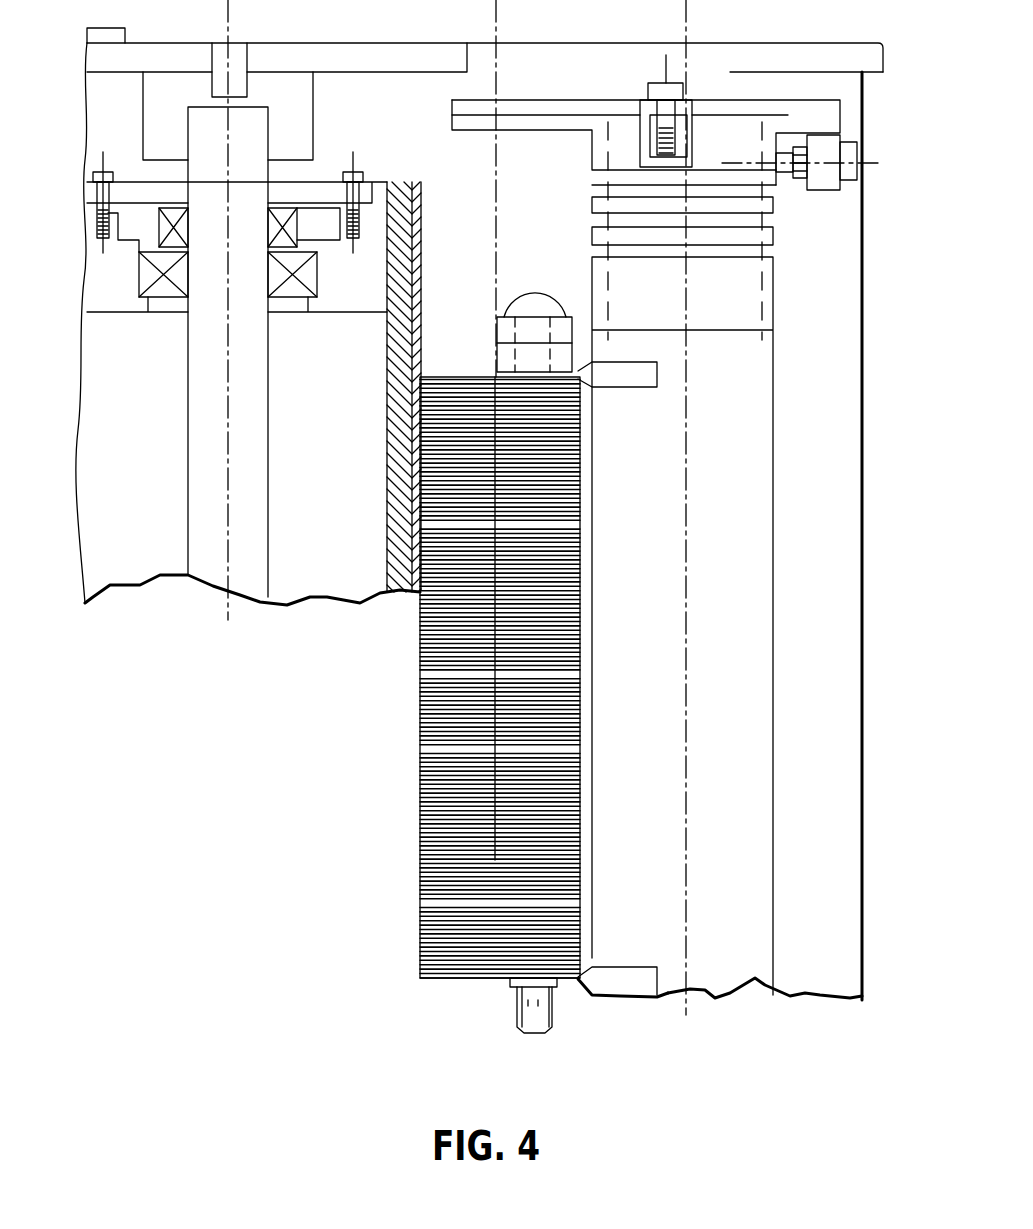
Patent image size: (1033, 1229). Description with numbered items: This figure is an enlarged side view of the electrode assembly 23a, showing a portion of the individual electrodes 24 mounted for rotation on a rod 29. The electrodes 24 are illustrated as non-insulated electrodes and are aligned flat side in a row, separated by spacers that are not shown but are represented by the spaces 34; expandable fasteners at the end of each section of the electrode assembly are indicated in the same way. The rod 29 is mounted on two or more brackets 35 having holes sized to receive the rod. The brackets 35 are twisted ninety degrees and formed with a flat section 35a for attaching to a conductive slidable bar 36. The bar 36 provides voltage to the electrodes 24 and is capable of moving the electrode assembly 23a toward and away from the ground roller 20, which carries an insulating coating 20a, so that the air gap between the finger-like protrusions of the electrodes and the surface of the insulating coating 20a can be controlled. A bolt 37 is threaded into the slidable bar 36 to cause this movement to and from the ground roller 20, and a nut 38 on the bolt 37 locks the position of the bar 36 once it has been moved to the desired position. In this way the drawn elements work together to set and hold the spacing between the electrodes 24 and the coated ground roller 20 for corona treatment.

The ground roller 20 is at (479, 377).
The insulating coating 20a is at (601, 525).
The electrode assembly 23a is at (476, 989).
The electrodes 24 is at (453, 378).
The rod 29 is at (553, 1027).
The spaces 34 is at (382, 428).
The brackets 35 is at (622, 964).
The flat section 35a is at (632, 983).
The slidable bar 36 is at (725, 978).
The bolt 37 is at (850, 172).
The nut 38 is at (814, 576).